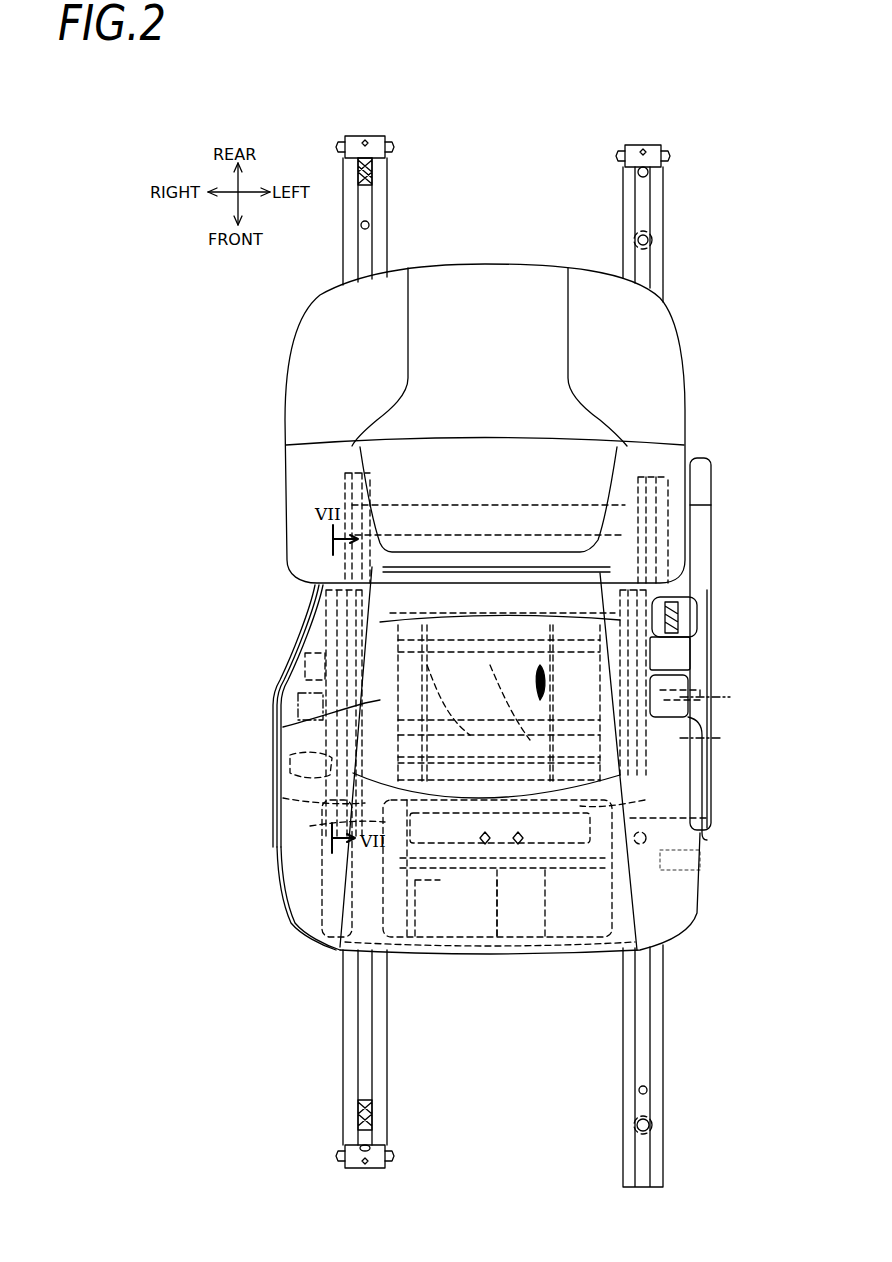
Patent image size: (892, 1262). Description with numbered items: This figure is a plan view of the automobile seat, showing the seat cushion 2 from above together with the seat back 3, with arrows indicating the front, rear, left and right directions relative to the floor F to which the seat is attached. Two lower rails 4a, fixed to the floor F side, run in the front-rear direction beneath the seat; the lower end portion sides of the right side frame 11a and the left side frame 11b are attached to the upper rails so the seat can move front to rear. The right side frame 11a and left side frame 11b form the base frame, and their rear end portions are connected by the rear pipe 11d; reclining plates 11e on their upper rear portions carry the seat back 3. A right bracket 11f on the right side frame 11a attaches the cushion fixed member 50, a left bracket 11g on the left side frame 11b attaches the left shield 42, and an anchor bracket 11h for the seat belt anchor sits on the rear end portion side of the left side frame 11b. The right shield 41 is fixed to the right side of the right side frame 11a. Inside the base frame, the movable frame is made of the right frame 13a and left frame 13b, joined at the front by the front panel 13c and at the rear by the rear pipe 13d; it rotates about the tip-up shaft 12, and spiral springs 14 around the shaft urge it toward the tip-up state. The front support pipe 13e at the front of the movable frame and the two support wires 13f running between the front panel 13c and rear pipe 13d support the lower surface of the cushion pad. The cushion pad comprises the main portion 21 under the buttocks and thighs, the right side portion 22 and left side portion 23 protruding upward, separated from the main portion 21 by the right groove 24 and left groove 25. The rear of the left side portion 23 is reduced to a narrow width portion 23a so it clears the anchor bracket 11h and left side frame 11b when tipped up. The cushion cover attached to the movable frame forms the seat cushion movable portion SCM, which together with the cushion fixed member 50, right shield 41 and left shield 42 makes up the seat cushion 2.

The seat cushion 2 is at (697, 908).
The seat back 3 is at (685, 357).
The lower rail 4a is at (622, 229).
The right side frame 11a is at (318, 590).
The left side frame 11b is at (683, 650).
The rear pipe 11d is at (478, 500).
The reclining plate 11e is at (500, 950).
The right bracket 11f is at (290, 768).
The left bracket 11g is at (707, 700).
The anchor bracket 11h is at (687, 610).
The tip-up shaft 12 is at (688, 688).
The right frame 13a is at (310, 826).
The left frame 13b is at (655, 830).
The front panel 13c is at (560, 950).
The rear pipe 13d is at (480, 612).
The front support pipe 13e is at (447, 955).
The support wire 13f is at (455, 730).
The spiral spring 14 is at (310, 693).
The main portion 21 is at (315, 923).
The right side portion 22 is at (302, 870).
The left side portion 23 is at (665, 880).
The narrow width portion 23a is at (657, 587).
The right groove 24 is at (283, 798).
The left groove 25 is at (645, 800).
The right shield 41 is at (277, 714).
The left shield 42 is at (711, 753).
The cushion fixed member 50 is at (315, 655).
The seat cushion movable portion SCM is at (700, 857).
The floor F is at (500, 1135).